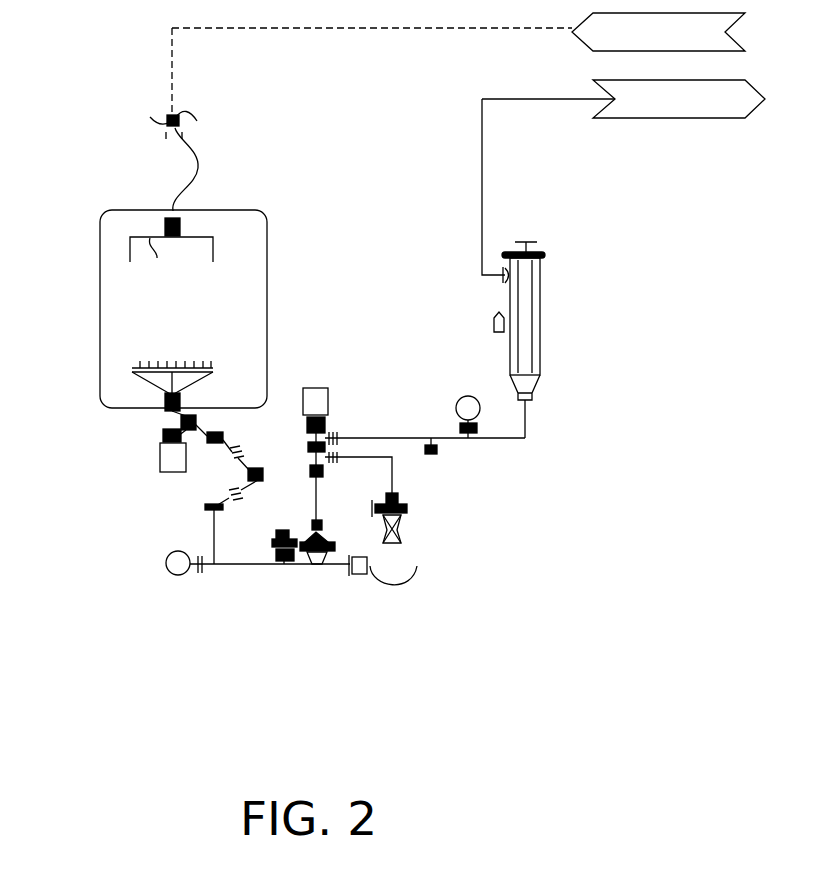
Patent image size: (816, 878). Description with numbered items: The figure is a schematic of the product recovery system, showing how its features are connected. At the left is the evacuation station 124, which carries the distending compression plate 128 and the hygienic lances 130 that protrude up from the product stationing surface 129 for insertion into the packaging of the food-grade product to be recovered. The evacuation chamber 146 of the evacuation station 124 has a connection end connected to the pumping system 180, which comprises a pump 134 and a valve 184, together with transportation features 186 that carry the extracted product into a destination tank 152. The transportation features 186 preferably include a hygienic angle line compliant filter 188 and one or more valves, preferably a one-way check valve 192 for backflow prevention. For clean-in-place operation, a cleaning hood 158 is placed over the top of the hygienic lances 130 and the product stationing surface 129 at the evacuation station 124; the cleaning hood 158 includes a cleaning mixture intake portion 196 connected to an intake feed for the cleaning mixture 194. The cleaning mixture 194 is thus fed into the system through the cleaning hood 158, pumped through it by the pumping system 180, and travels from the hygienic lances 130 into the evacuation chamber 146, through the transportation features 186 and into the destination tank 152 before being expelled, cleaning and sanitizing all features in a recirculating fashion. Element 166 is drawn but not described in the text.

The evacuation station 124 is at (105, 213).
The distending compression plate 128 is at (157, 257).
The product stationing surface 129 is at (215, 368).
The hygienic lances 130 is at (137, 367).
The pump 134 is at (160, 457).
The evacuation chamber 146 is at (425, 565).
The destination tank 152 is at (540, 312).
The cleaning hood 158 is at (213, 250).
The pump 166 is at (168, 567).
The pumping system 180 is at (120, 518).
The valve 184 is at (658, 32).
The transportation features 186 is at (274, 528).
The hygienic angle line 3-A compliant filter 188 is at (407, 509).
The one-way 3-A check valve 192 is at (304, 457).
The cleaning mixture 194 is at (162, 418).
The cleaning mixture intake portion 196 is at (181, 226).